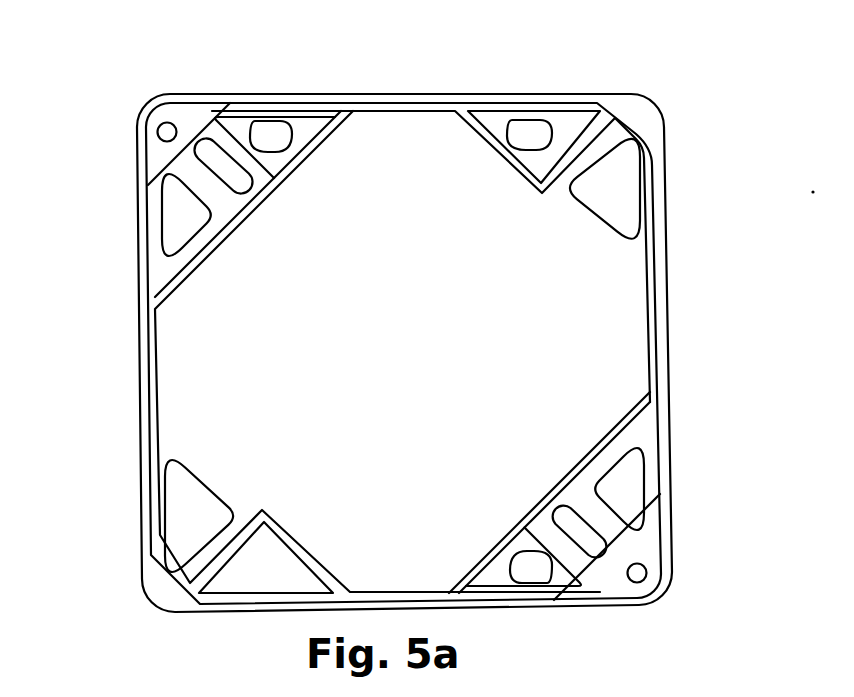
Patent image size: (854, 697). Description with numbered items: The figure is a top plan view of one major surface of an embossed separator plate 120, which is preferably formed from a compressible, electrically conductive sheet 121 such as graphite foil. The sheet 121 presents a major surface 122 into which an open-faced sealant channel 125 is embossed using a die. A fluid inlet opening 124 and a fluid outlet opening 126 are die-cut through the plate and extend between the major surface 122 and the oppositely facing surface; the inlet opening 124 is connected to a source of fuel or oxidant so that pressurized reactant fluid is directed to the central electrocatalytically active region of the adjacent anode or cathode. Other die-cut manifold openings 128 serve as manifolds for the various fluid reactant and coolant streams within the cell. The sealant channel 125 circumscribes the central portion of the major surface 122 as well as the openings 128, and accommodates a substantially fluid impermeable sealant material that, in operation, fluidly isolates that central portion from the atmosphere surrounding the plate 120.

The embossed separator plate 120 is at (659, 81).
The sheet 121 is at (667, 120).
The major surface 122 is at (655, 303).
The fluid inlet opening 124 is at (636, 205).
The sealant channel 125 is at (355, 104).
The fluid outlet opening 126 is at (172, 530).
The manifold openings 128 is at (255, 124).